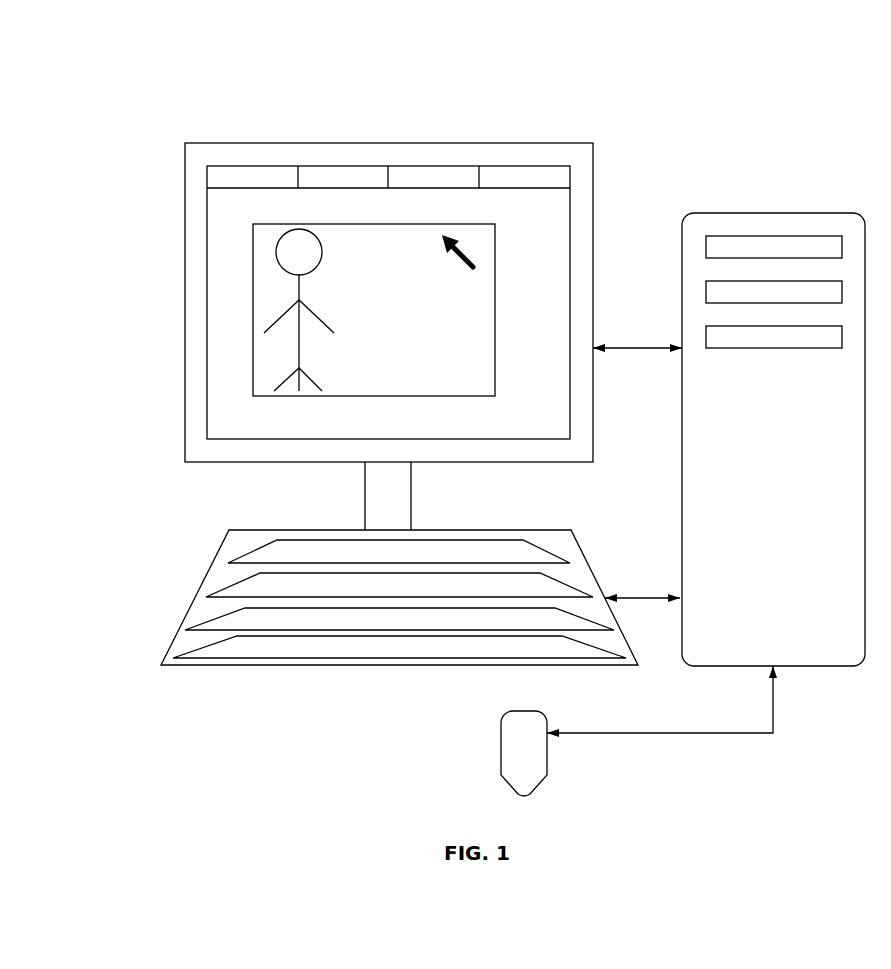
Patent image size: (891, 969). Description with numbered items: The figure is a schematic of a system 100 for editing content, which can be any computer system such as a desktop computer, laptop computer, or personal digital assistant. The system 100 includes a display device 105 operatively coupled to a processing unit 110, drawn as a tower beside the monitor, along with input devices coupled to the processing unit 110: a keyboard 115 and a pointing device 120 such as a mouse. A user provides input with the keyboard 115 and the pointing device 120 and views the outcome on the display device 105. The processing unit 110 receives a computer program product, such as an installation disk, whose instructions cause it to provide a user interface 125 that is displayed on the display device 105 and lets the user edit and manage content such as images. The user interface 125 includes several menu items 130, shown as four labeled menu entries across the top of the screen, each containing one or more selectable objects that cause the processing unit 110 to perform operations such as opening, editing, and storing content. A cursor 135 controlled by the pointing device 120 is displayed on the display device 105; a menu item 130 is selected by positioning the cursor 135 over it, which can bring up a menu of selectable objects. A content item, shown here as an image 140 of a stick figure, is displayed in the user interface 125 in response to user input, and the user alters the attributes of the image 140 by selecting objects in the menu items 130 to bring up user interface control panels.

The system 100 is at (657, 108).
The display device 105 is at (185, 204).
The processing unit 110 is at (706, 475).
The keyboard 115 is at (195, 597).
The pointing device 120 is at (501, 748).
The user interface 125 is at (207, 264).
The menu items 130 is at (525, 166).
The cursor 135 is at (583, 223).
The image 140 is at (253, 323).